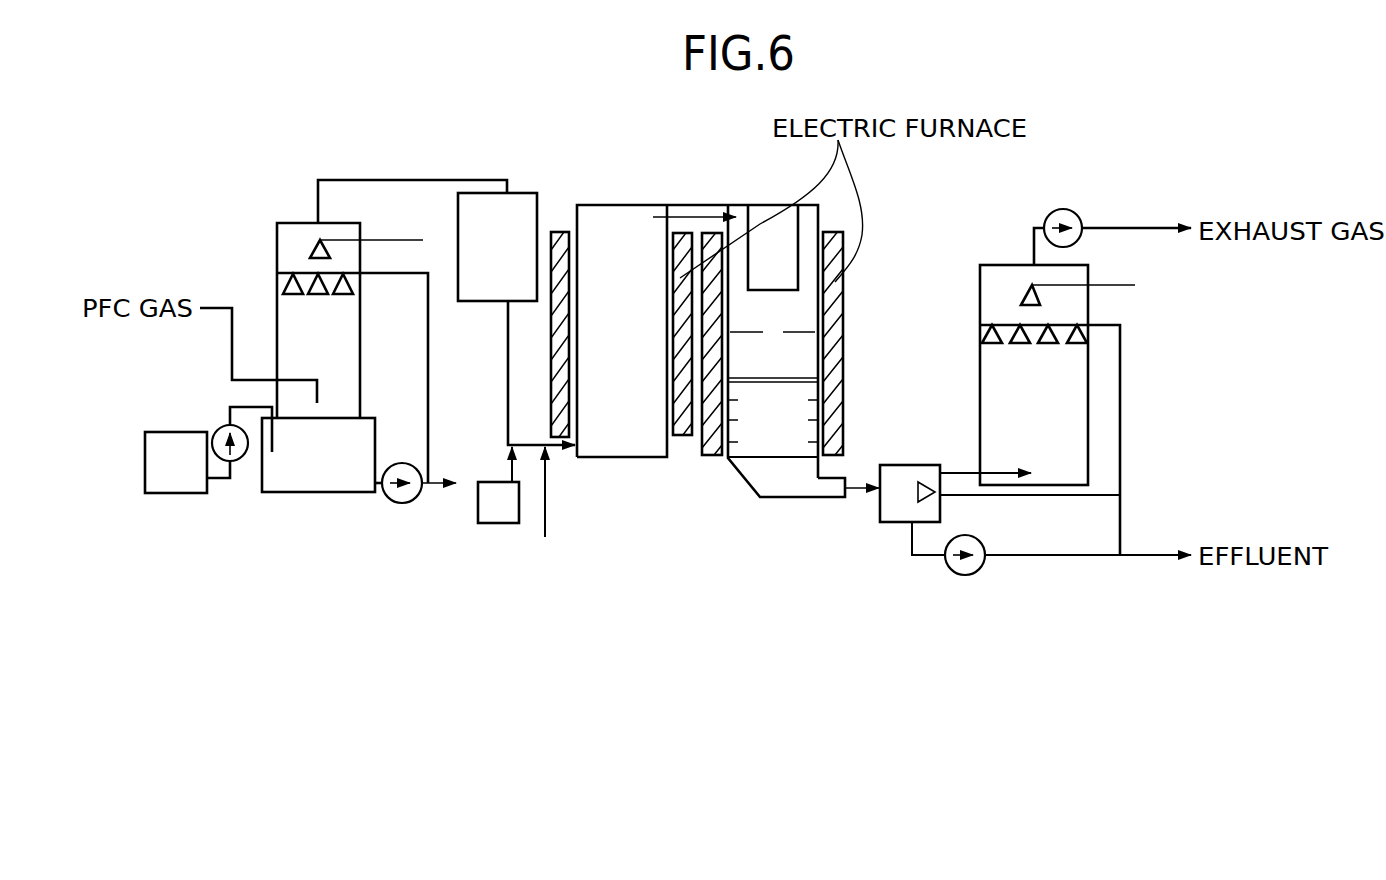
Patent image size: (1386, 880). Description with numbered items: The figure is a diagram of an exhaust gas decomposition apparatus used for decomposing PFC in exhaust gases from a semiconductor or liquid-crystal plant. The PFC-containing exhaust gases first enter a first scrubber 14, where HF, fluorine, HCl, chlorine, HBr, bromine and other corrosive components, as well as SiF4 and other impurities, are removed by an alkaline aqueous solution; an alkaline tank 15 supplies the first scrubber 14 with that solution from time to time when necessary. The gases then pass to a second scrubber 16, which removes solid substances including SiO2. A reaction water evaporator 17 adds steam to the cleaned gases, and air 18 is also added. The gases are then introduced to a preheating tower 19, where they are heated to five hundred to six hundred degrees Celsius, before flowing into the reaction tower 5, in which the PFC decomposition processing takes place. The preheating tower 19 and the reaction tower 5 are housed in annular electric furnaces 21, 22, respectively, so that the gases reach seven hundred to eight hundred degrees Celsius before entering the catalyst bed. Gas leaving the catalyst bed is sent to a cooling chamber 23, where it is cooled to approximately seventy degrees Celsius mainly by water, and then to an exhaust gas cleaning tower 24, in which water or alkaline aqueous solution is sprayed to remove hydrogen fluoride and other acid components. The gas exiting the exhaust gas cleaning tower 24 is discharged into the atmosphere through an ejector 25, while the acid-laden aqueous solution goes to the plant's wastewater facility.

The reaction tube 5 is at (728, 468).
The first scrubber 14 is at (310, 492).
The alkaline tank 15 is at (145, 462).
The second scrubber 16 is at (484, 205).
The reaction water evaporator 17 is at (493, 523).
The air 18 is at (547, 511).
The preheating tower 19 is at (640, 205).
The annular electric furnace 21 is at (558, 232).
The annular electric furnace 22 is at (845, 398).
The cooling chamber 23 is at (893, 523).
The exhaust gas cleaning tower 24 is at (1000, 265).
The ejector 25 is at (1065, 210).